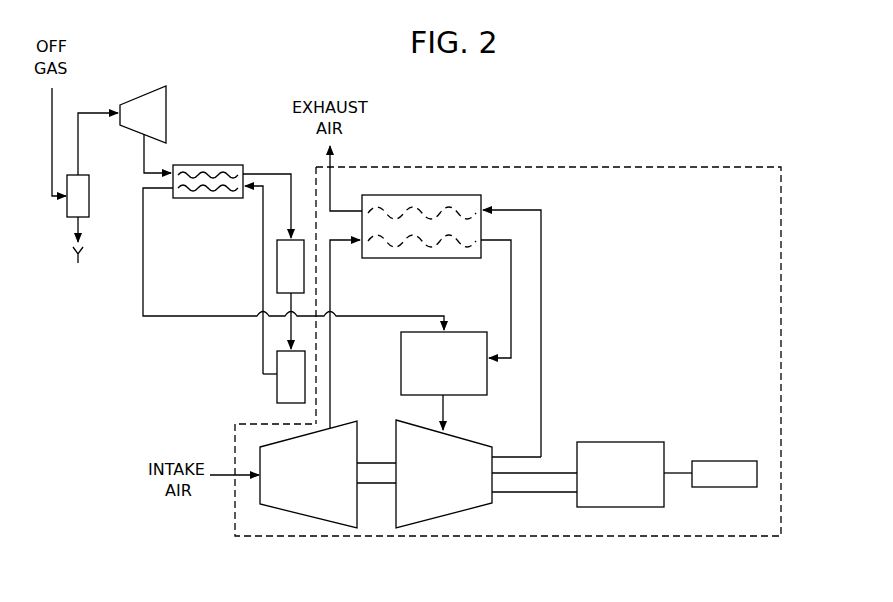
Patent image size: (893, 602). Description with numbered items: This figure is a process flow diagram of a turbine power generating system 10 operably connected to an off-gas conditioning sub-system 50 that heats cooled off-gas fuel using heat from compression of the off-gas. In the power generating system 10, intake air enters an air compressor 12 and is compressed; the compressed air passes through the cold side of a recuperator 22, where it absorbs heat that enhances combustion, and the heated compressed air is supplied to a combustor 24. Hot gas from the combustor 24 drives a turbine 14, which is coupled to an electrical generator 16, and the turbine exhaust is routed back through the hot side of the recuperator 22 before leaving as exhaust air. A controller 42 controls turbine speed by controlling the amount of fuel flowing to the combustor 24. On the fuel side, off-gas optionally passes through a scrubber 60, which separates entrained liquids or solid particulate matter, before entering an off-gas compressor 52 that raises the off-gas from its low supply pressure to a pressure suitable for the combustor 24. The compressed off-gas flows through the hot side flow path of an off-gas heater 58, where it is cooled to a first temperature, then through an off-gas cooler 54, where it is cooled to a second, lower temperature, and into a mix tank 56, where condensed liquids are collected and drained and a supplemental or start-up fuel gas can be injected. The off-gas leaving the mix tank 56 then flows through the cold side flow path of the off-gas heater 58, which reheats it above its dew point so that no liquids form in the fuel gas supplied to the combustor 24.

The turbine power generating system 10 is at (783, 201).
The air compressor 12 is at (300, 514).
The turbine 14 is at (445, 516).
The electrical generator 16 is at (617, 442).
The recuperator 22 is at (432, 195).
The combustor 24 is at (401, 368).
The controller 42 is at (725, 461).
The off-gas conditioning sub-system 50 is at (134, 258).
The off-gas compressor 52 is at (142, 91).
The off-gas cooler 54 is at (277, 258).
The mix tank 56 is at (277, 388).
The off-gas heater 58 is at (210, 165).
The scrubber 60 is at (89, 185).